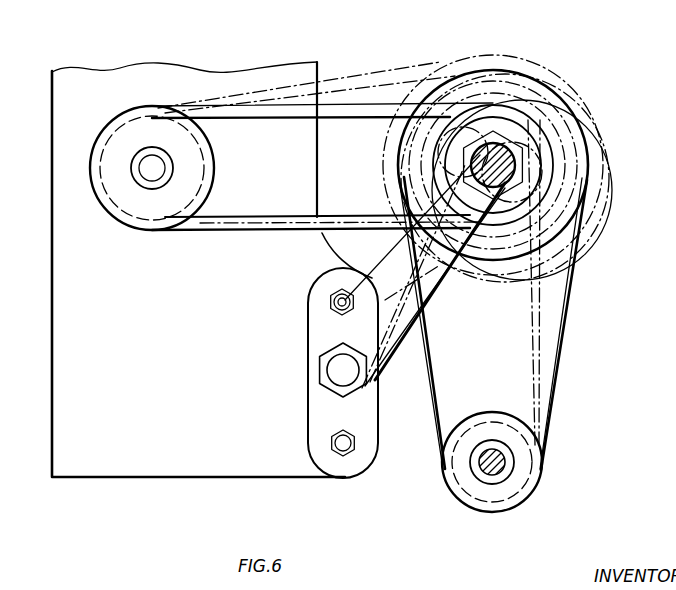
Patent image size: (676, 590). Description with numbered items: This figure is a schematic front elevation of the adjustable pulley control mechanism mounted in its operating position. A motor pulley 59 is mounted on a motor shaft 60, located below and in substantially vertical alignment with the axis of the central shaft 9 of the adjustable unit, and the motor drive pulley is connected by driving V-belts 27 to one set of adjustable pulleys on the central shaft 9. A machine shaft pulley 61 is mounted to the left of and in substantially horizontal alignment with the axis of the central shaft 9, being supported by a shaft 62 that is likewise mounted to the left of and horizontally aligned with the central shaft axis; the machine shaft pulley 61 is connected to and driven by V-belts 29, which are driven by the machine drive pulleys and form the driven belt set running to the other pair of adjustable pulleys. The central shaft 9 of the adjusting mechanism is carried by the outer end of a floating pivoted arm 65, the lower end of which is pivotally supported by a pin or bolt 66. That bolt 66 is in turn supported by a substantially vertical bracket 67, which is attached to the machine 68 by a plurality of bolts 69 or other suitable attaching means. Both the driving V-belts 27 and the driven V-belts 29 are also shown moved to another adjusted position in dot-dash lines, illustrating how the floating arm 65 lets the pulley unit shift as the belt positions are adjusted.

The central shaft 9 is at (500, 162).
The V-belt 27 is at (420, 300).
The V-belt 29 is at (292, 113).
The motor pulley 59 is at (523, 497).
The motor shaft 60 is at (482, 470).
The machine shaft pulley 61 is at (140, 232).
The shaft 62 is at (141, 174).
The floating pivoted arm 65 is at (415, 348).
The pin or bolt 66 is at (326, 378).
The bracket 67 is at (309, 318).
The machine 68 is at (160, 477).
The bolts 69 is at (356, 441).